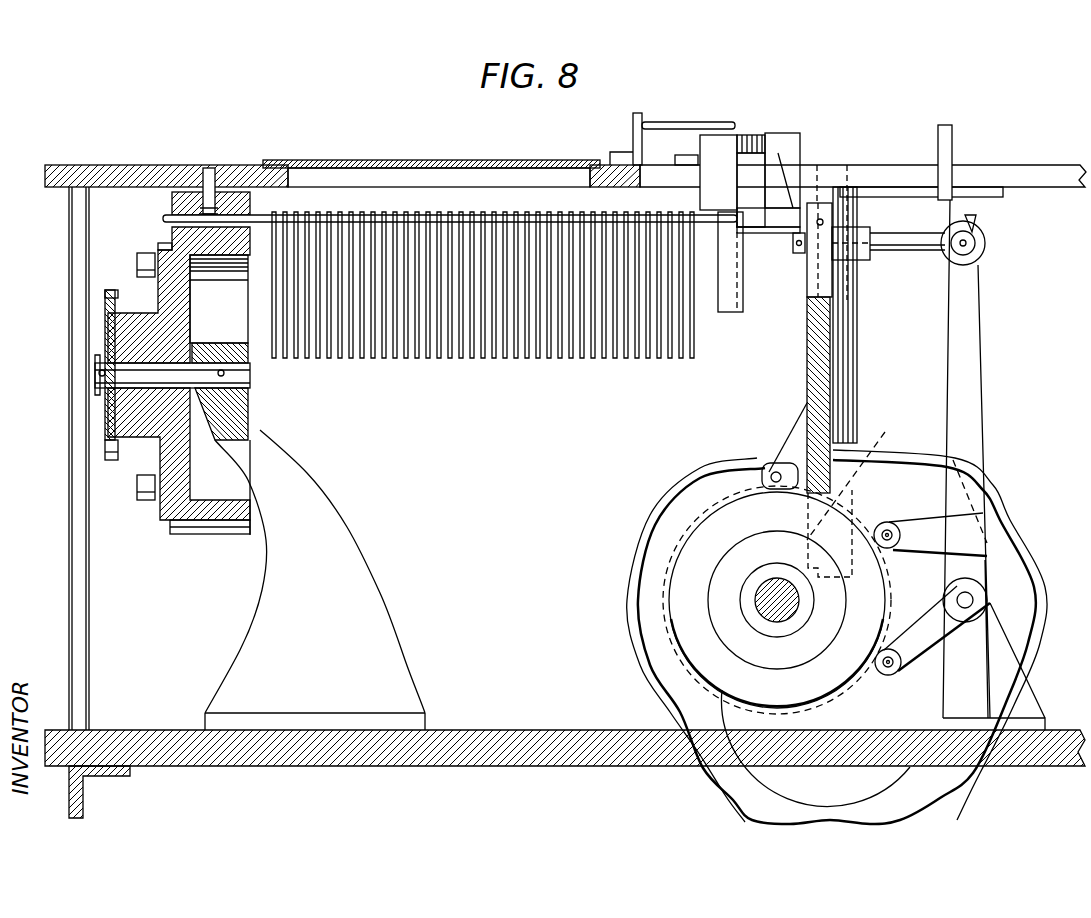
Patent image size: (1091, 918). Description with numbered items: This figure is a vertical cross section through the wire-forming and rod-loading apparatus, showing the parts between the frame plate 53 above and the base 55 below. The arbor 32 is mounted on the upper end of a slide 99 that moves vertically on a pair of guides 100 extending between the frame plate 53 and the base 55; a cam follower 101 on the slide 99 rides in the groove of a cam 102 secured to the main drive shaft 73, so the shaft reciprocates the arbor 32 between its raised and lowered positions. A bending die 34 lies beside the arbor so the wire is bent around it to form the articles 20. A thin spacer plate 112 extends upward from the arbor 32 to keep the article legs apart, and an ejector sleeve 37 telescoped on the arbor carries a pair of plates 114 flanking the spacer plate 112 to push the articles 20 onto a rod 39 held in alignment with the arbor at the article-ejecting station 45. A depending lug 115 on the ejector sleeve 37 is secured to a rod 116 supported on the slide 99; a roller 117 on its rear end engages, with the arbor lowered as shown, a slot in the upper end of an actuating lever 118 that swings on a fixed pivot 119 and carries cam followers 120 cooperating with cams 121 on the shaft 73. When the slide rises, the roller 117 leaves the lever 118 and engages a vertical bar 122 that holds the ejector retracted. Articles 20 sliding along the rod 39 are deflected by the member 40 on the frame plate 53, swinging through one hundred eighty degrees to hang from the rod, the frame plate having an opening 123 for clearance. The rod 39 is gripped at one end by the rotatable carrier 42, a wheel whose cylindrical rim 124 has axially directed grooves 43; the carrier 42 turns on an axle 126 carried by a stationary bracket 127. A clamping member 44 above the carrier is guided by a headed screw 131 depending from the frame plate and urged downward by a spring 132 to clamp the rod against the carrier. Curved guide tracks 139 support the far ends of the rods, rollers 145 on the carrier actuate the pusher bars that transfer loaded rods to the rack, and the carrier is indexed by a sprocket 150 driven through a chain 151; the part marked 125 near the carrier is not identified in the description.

The wire article 20 is at (488, 360).
The arbor 32 is at (755, 224).
The bending die 34 is at (790, 143).
The ejector sleeve 37 is at (782, 235).
The rod 39 is at (158, 246).
The deflector member 40 is at (718, 126).
The rotatable carrier 42 is at (165, 525).
The peripheral slots 43 is at (200, 523).
The clamping member 44 is at (176, 204).
The article-ejecting station 45 is at (708, 240).
The frame plate 53 is at (58, 172).
The base 55 is at (546, 730).
The main drive shaft 73 is at (778, 579).
The slide 99 is at (818, 373).
The guides 100 is at (815, 683).
The cam follower 101 is at (770, 472).
The cam 102 is at (729, 459).
The spacer plate 112 is at (745, 200).
The plates 114 is at (772, 180).
The depending lug 115 is at (801, 255).
The rod 116 is at (920, 250).
The roller 117 is at (987, 248).
The actuating lever 118 is at (965, 392).
The fixed pivot 119 is at (967, 600).
The cam followers 120 is at (887, 522).
The cams 121 is at (703, 557).
The vertical bar 122 is at (948, 151).
The opening 123 is at (653, 176).
The cylindrical rim 124 is at (249, 505).
The flange 125 is at (112, 405).
The axle 126 is at (185, 372).
The stationary bracket 127 is at (327, 527).
The headed screw 131 is at (252, 200).
The spring 132 is at (207, 192).
The curved guide tracks 139 is at (727, 311).
The rollers 145 is at (140, 265).
The sprocket 150 is at (108, 327).
The chain 151 is at (115, 462).